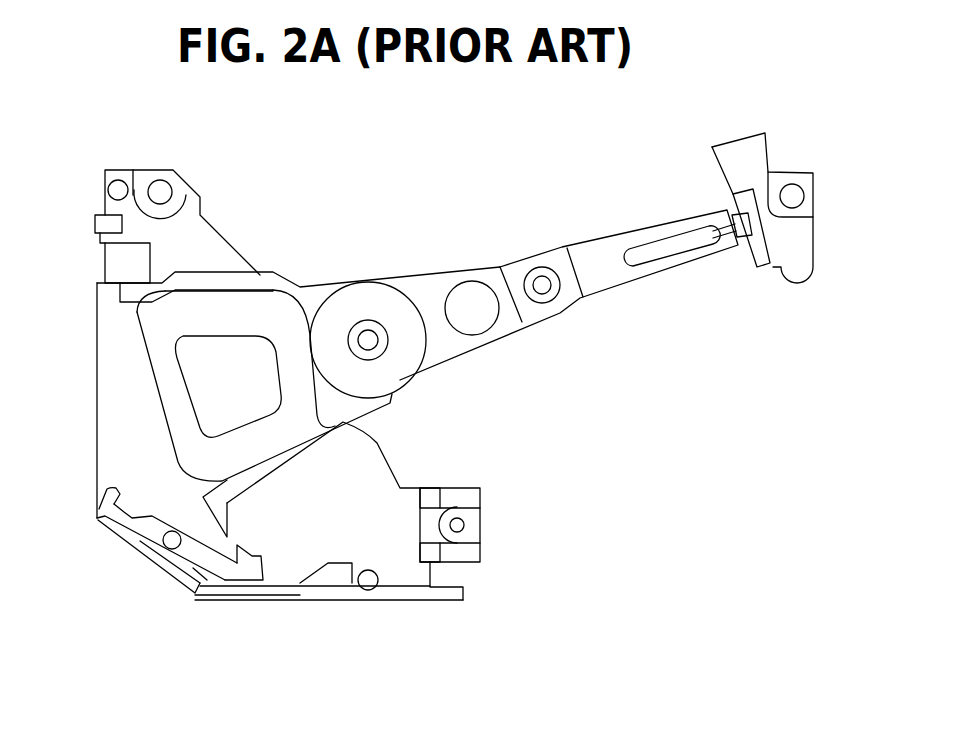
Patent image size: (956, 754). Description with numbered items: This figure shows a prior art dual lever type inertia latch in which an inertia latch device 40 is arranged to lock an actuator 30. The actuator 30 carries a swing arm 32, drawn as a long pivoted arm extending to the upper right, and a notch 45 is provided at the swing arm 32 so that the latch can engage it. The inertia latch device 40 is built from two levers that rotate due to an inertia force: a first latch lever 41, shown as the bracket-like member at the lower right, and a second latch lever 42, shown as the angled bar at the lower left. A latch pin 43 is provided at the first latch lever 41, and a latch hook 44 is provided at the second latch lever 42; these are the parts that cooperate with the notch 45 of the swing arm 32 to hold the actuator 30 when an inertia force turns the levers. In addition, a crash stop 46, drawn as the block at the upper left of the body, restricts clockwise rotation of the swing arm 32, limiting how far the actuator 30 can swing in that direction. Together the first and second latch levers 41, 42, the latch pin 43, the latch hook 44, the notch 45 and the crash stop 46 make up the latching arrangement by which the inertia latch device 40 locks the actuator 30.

The actuator 30 is at (490, 245).
The swing arm 32 is at (468, 348).
The inertia latch device 40 is at (258, 612).
The first latch lever 41 is at (413, 590).
The second latch lever 42 is at (113, 518).
The latch pin 43 is at (192, 596).
The latch hook 44 is at (243, 555).
The notch 45 is at (223, 517).
The crash stop 46 is at (113, 263).